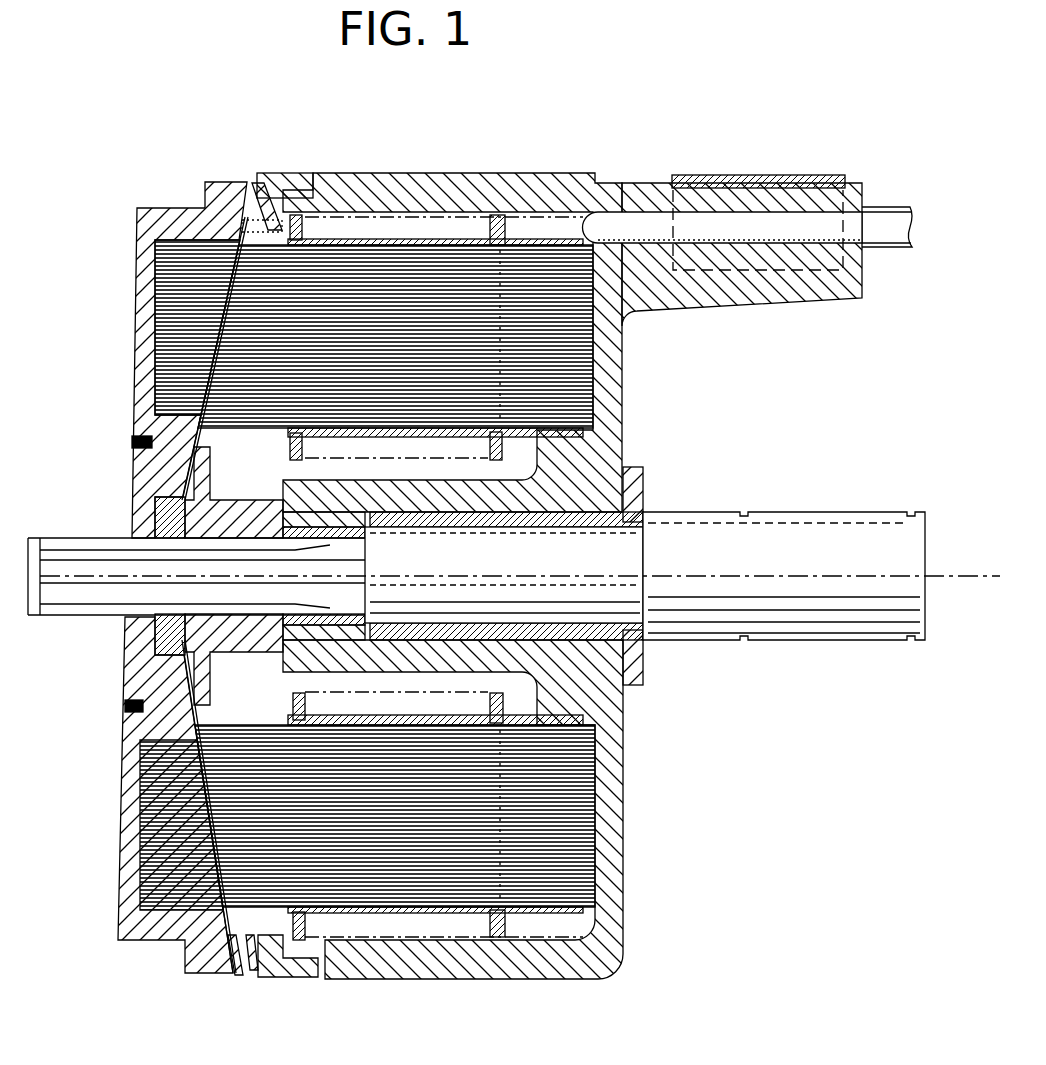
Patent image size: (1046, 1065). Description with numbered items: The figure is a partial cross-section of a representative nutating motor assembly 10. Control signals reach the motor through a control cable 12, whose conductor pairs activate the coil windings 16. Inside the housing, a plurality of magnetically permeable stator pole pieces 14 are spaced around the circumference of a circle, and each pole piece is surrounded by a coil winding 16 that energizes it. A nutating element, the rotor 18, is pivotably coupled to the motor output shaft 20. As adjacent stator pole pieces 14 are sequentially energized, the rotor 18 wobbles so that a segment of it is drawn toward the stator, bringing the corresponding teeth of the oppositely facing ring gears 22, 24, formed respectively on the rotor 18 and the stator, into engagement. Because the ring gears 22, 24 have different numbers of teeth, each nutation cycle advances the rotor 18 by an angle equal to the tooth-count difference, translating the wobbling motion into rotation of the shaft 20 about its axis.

The nutating motor assembly 10 is at (578, 114).
The control cable 12 is at (690, 215).
The stator pole pieces 14 is at (388, 255).
The coil winding 16 is at (483, 232).
The rotor 18 is at (150, 295).
The motor output shaft 20 is at (780, 540).
The ring gear 22 is at (232, 968).
The ring gear 24 is at (253, 965).